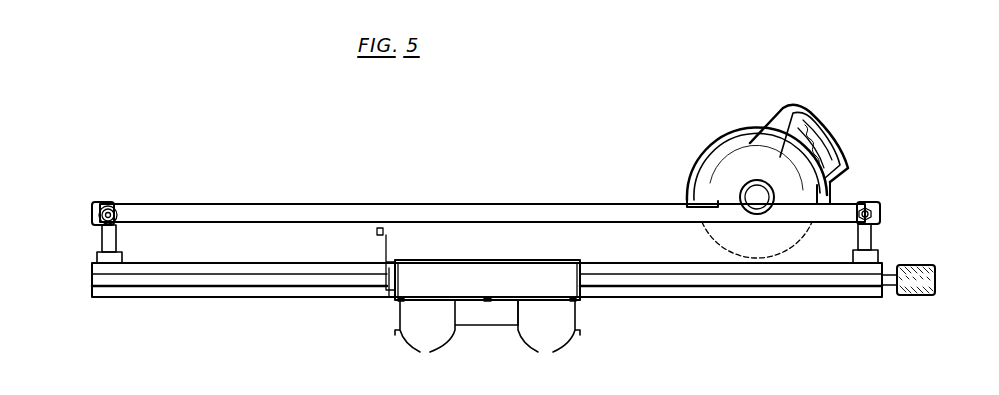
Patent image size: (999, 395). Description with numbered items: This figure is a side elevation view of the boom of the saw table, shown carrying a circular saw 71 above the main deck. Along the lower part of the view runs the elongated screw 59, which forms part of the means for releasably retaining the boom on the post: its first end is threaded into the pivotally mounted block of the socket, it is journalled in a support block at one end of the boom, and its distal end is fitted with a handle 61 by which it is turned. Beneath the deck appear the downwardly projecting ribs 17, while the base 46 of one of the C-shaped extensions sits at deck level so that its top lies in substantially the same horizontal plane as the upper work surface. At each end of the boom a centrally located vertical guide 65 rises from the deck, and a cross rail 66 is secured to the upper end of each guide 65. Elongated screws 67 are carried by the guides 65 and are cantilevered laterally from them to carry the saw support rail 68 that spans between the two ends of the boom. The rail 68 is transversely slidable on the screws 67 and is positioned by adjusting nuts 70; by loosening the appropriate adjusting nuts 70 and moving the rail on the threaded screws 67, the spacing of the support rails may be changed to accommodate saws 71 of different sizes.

The downwardly projecting ribs 17 is at (487, 336).
The base 46 is at (566, 286).
The elongated screw 59 is at (699, 283).
The handle 61 is at (928, 295).
The vertical guides 65 is at (103, 240).
The cross rails 66 is at (95, 203).
The elongated screws 67 is at (116, 222).
The saw support rail 68 is at (323, 210).
The adjusting nuts 70 is at (115, 210).
The saw 71 is at (724, 138).